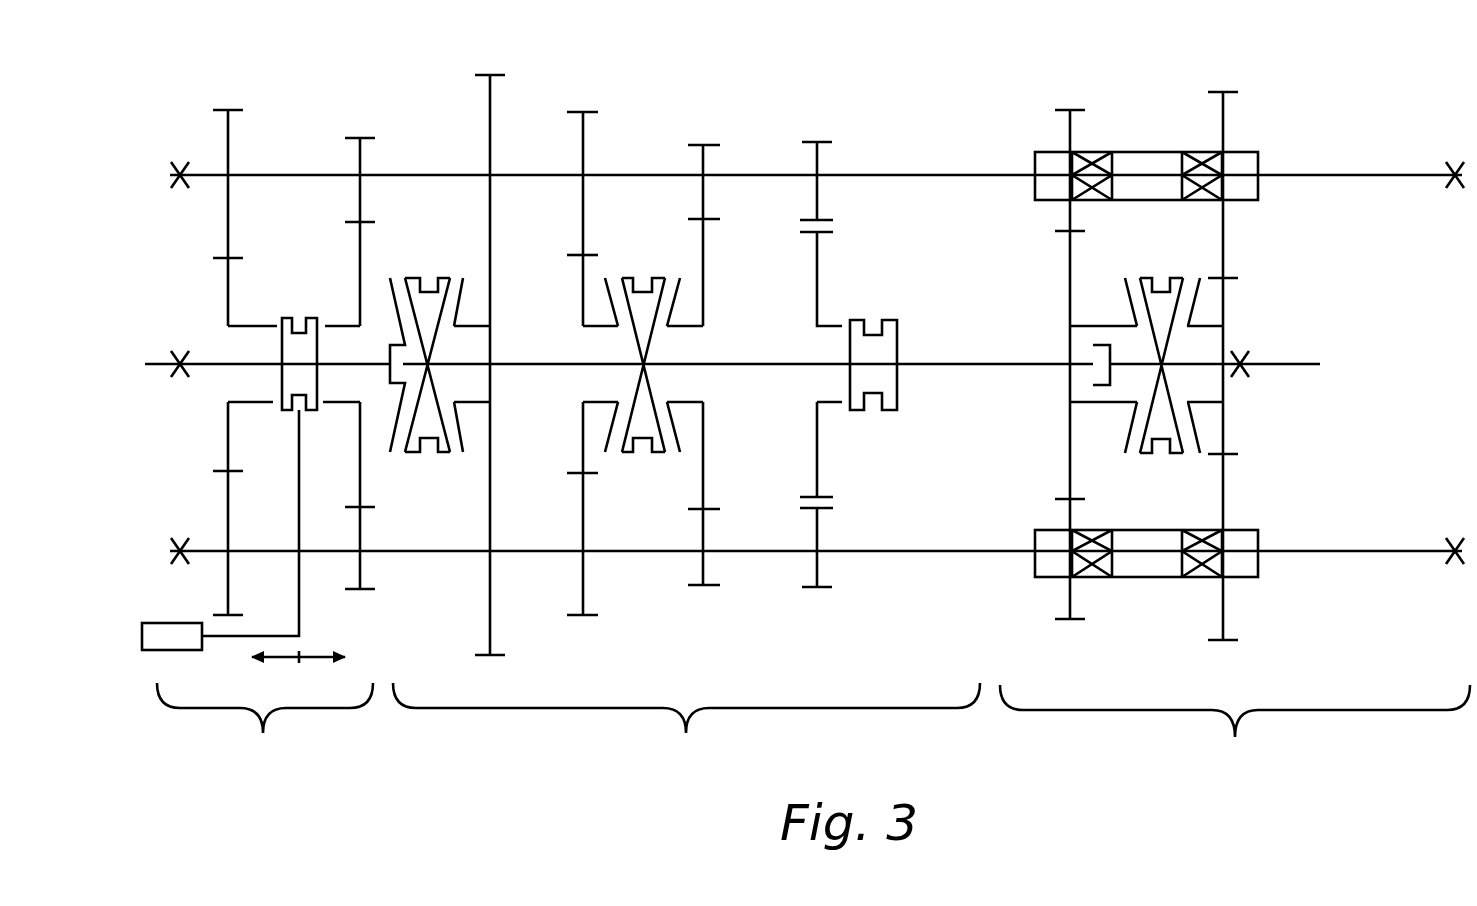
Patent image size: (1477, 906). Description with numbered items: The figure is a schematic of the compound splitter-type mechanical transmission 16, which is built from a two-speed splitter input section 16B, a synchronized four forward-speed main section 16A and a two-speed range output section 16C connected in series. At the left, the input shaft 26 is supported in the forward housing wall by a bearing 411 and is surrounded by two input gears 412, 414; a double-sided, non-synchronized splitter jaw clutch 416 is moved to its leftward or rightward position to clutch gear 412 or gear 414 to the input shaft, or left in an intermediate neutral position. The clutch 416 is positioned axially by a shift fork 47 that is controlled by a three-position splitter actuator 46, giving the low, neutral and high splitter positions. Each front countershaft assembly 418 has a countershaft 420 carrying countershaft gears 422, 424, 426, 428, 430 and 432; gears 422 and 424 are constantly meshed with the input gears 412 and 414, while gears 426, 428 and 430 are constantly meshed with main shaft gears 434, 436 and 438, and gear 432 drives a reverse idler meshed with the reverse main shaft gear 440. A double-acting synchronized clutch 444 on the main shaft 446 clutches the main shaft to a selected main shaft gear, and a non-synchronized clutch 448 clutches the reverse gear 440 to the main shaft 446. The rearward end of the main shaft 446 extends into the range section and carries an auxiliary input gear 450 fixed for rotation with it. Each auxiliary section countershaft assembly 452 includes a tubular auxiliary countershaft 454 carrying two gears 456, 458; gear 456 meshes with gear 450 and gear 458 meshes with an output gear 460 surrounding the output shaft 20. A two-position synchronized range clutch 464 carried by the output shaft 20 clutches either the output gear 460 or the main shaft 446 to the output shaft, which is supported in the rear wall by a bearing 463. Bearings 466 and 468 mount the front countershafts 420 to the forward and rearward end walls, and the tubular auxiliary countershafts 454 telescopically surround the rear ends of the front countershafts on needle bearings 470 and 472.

The transmission 16 is at (813, 398).
The main section 16A is at (686, 724).
The splitter input section 16B is at (265, 724).
The range output section 16C is at (1235, 727).
The output shaft 20 is at (1277, 368).
The input shaft 26 is at (150, 368).
The splitter actuator 46 is at (185, 622).
The shift fork 47 is at (299, 612).
The bearing 411 is at (180, 360).
The input gear 412 is at (228, 300).
The input gear 414 is at (360, 270).
The splitter jaw clutch 416 is at (291, 412).
The front countershaft assembly 418 is at (372, 102).
The countershaft 420 is at (646, 174).
The countershaft gear 422 is at (228, 135).
The countershaft gear 424 is at (360, 155).
The countershaft gear 426 is at (490, 148).
The countershaft gear 428 is at (583, 130).
The countershaft gear 430 is at (703, 157).
The countershaft gear 432 is at (817, 152).
The main shaft gear 434 is at (490, 253).
The main shaft gear 436 is at (583, 203).
The main shaft gear 438 is at (703, 250).
The reverse main shaft gear 440 is at (817, 300).
The double-acting synchronized clutch 444 is at (648, 455).
The main shaft 446 is at (740, 368).
The non-synchronized clutch 448 is at (868, 320).
The auxiliary input gear 450 is at (1070, 300).
The auxiliary section countershaft assembly 452 is at (1098, 126).
The auxiliary section countershaft 454 is at (1140, 152).
The auxiliary section countershaft gear 456 is at (1070, 130).
The auxiliary section countershaft gear 458 is at (1223, 128).
The output gear 460 is at (1223, 303).
The bearing 463 is at (1242, 360).
The synchronized range clutch 464 is at (1161, 292).
The bearing 466 is at (180, 172).
The bearing 468 is at (1455, 172).
The needle bearing 470 is at (1057, 577).
The needle bearing 472 is at (1203, 530).